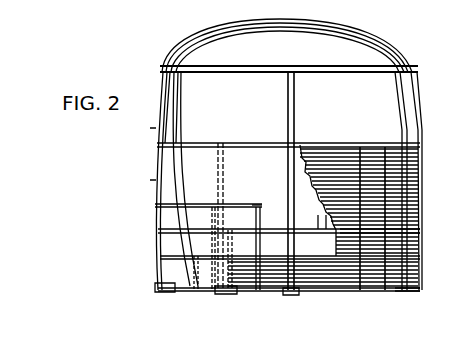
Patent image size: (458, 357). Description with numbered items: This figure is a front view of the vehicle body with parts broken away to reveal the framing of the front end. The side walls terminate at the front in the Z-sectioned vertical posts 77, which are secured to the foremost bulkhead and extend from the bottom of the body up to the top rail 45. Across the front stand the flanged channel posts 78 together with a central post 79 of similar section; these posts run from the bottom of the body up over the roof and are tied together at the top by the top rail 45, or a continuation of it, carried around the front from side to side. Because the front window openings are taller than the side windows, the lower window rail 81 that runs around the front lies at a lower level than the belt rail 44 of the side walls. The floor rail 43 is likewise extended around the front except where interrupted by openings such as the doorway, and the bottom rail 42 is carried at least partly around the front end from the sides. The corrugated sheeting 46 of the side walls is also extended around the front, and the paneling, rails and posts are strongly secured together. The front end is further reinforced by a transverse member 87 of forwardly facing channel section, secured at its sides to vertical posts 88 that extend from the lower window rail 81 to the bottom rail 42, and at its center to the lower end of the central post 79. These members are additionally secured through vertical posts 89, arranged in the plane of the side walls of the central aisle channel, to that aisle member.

The bottom rail 42 is at (405, 291).
The floor rail 43 is at (419, 215).
The belt rail 44 is at (419, 131).
The top rail 45 is at (352, 72).
The corrugated sheeting 46 is at (420, 174).
The vertical post 77 is at (158, 167).
The post 78 is at (183, 104).
The central post 79 is at (295, 103).
The lower window rail 81 is at (337, 143).
The transverse member 87 is at (270, 240).
The vertical post 88 is at (224, 178).
The vertical post 89 is at (259, 207).